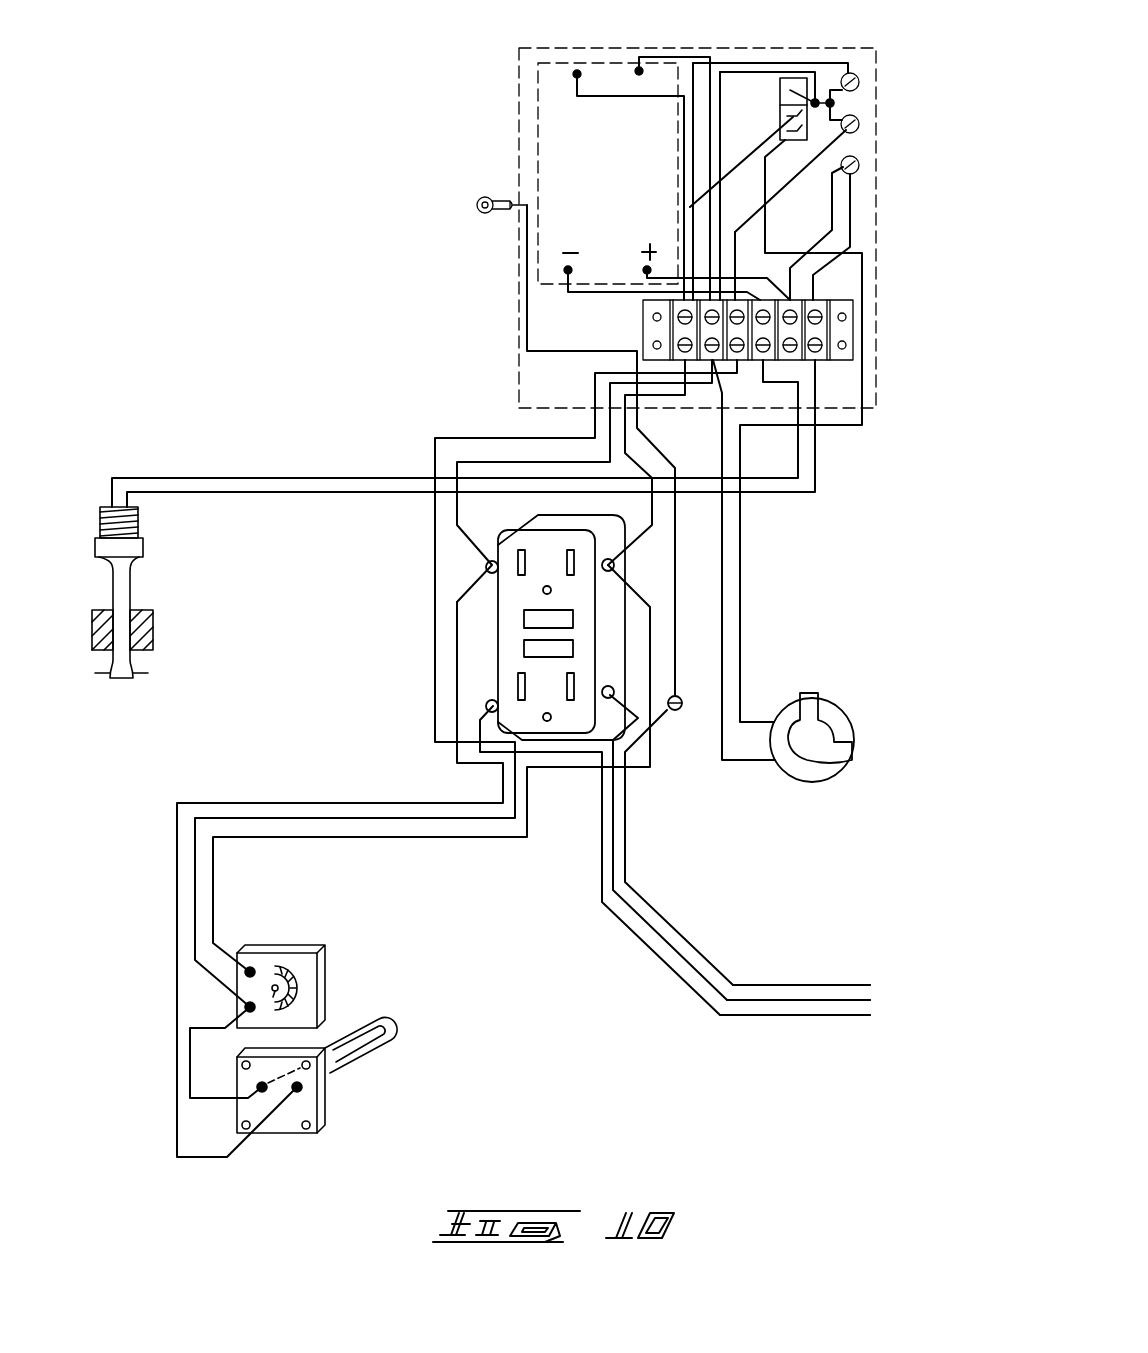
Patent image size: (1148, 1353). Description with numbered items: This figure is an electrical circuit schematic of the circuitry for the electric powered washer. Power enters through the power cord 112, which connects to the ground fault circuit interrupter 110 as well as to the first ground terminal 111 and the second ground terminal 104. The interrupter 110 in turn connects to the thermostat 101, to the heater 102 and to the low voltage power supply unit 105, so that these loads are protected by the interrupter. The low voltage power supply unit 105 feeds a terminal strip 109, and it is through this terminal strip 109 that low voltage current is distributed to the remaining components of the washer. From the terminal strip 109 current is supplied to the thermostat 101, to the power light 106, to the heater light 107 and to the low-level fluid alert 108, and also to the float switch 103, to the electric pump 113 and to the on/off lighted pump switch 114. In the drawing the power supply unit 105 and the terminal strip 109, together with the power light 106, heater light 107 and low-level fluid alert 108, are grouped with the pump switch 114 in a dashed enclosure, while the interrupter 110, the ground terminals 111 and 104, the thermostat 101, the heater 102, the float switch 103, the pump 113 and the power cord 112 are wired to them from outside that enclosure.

The thermostat 101 is at (327, 978).
The heater 102 is at (327, 1102).
The float switch 103 is at (157, 630).
The second ground terminal 104 is at (478, 205).
The low voltage power supply unit 105 is at (577, 133).
The power light 106 is at (860, 83).
The heater light 107 is at (860, 125).
The low-level fluid alert 108 is at (860, 166).
The terminal strip 109 is at (853, 330).
The ground fault circuit interrupter 110 is at (608, 628).
The first ground terminal 111 is at (683, 708).
The power cord 112 is at (838, 982).
The electric pump 113 is at (852, 715).
The on/off lighted pump switch 114 is at (777, 53).